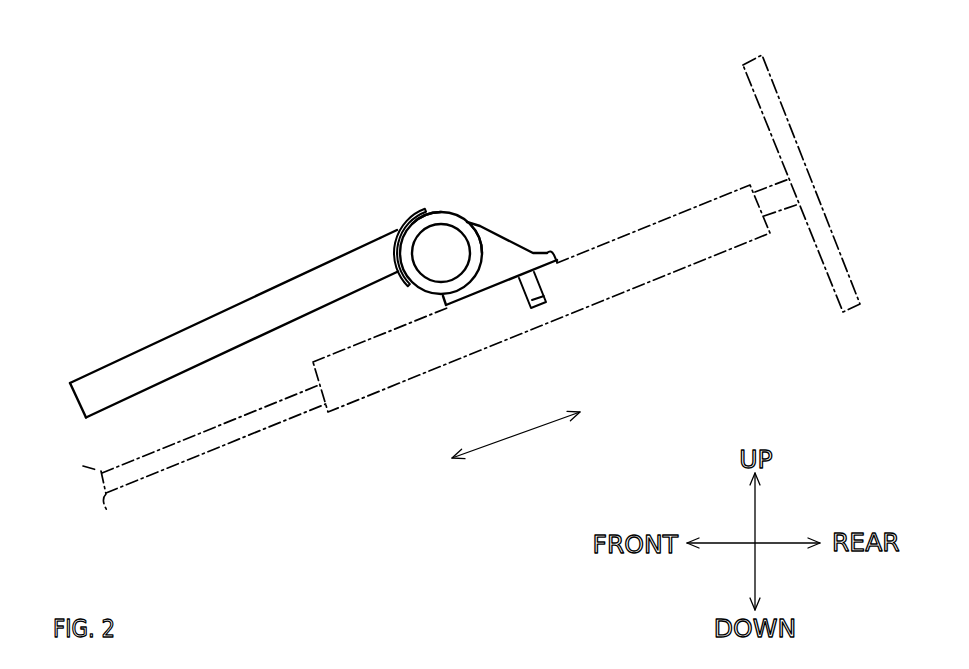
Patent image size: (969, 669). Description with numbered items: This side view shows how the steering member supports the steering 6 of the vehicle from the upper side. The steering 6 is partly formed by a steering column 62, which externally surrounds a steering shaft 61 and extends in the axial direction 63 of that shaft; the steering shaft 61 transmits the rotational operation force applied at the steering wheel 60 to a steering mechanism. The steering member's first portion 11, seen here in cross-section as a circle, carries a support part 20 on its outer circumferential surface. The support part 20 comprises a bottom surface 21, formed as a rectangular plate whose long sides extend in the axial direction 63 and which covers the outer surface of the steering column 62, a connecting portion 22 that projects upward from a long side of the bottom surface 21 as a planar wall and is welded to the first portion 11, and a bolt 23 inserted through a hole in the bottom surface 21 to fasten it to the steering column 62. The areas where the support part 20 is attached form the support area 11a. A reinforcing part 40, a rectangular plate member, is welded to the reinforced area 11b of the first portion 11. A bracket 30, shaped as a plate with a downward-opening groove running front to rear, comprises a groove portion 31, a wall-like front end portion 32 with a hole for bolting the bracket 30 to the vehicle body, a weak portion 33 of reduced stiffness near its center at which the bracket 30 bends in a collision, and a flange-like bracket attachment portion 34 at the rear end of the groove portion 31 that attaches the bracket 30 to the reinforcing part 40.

The steering 6 is at (471, 302).
The first portion 11 is at (467, 209).
The support area 11a is at (488, 233).
The reinforced area 11b is at (417, 217).
The support part 20 is at (523, 263).
The bottom surface 21 is at (547, 253).
The connecting portion 22 is at (503, 250).
The bolt 23 is at (547, 308).
The bracket 30 is at (216, 306).
The groove portion 31 is at (165, 360).
The front end portion 32 is at (73, 402).
The weak portion 33 is at (252, 320).
The bracket attachment portion 34 is at (388, 253).
The reinforcing part 40 is at (410, 220).
The steering wheel 60 is at (840, 300).
The steering shaft 61 is at (165, 462).
The steering column 62 is at (425, 372).
The axial direction 63 is at (532, 432).